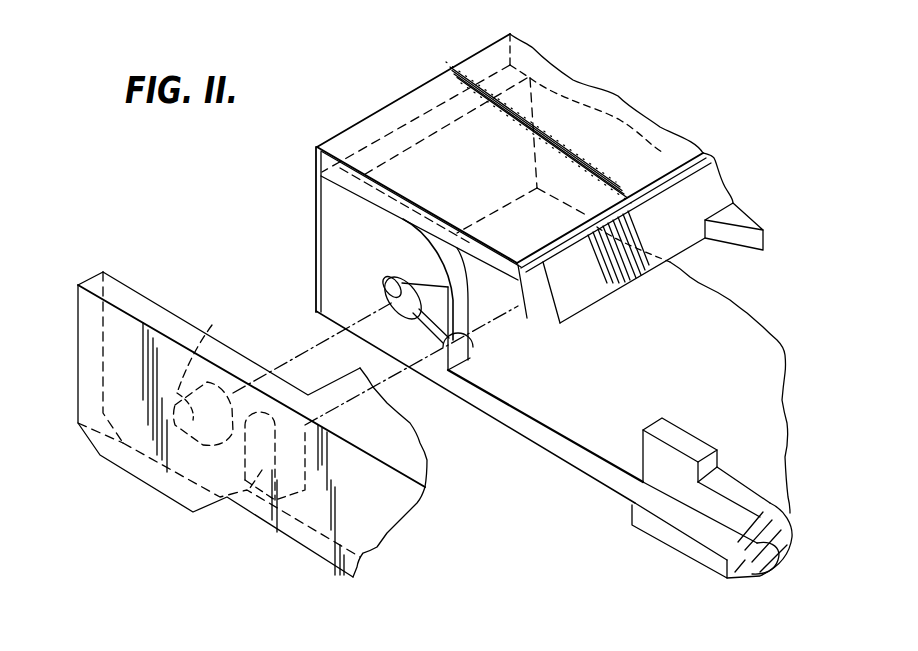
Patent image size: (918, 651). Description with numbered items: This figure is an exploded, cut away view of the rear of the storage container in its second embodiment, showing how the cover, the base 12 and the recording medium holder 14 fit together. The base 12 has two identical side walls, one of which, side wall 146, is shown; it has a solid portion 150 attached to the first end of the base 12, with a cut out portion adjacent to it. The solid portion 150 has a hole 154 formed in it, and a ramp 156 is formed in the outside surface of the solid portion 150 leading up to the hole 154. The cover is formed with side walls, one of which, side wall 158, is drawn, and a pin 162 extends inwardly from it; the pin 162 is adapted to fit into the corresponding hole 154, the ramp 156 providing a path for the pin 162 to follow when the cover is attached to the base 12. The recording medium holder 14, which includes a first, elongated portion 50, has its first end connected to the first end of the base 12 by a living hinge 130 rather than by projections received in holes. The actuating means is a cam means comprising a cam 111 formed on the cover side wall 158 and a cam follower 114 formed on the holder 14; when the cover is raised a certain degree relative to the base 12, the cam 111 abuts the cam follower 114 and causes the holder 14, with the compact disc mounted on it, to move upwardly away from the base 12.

The base 12 is at (764, 389).
The recording medium holder 14 is at (710, 180).
The first elongated portion 50 is at (583, 118).
The cam 111 is at (263, 463).
The cam follower 114 is at (522, 308).
The living hinge 130 is at (318, 209).
The side wall 146 is at (707, 467).
The solid portion 150 is at (337, 258).
The hole 154 is at (386, 297).
The ramp 156 is at (478, 338).
The side wall 158 is at (112, 366).
The pin 162 is at (210, 330).